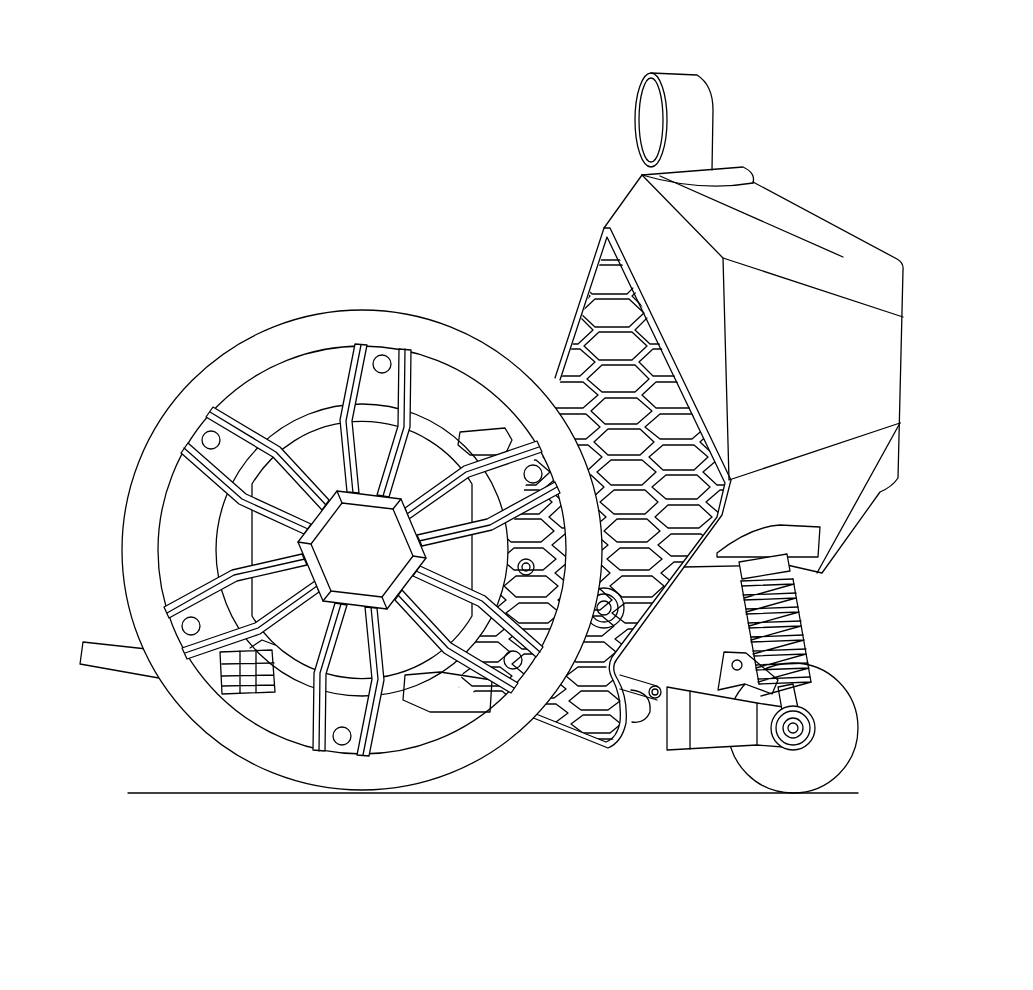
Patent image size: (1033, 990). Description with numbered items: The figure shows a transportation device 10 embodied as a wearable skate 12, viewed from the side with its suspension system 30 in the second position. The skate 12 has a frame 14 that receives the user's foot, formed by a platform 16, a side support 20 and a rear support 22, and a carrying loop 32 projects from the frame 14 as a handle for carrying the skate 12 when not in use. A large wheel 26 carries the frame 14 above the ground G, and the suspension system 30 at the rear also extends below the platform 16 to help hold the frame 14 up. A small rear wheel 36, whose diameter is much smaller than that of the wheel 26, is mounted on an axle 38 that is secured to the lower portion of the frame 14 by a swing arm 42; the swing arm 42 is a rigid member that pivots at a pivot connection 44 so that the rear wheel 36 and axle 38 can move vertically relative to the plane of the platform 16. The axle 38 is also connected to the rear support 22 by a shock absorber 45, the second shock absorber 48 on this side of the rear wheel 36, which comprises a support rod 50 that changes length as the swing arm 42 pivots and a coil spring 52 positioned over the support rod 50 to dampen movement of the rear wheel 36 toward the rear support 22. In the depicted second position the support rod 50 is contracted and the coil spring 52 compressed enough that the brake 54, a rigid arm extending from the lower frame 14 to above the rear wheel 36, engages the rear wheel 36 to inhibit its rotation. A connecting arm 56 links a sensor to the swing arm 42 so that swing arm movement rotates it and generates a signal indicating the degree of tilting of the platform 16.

The transportation device 10 is at (213, 190).
The wearable skate 12 is at (907, 297).
The frame 14 is at (622, 230).
The platform 16 is at (120, 653).
The side support 20 is at (583, 335).
The rear support 22 is at (812, 212).
The wheel 26 is at (362, 786).
The suspension system 30 is at (872, 762).
The carrying loop 32 is at (678, 78).
The rear wheel 36 is at (757, 785).
The axle 38 is at (847, 700).
The swing arm 42 is at (707, 732).
The pivot connection 44 is at (643, 718).
The shock absorber 45 is at (745, 630).
The second shock absorber 48 is at (832, 632).
The support rod 50 is at (823, 565).
The coil spring 52 is at (803, 602).
The brake 54 is at (718, 680).
The connecting arm 56 is at (654, 686).
The ground G is at (183, 796).